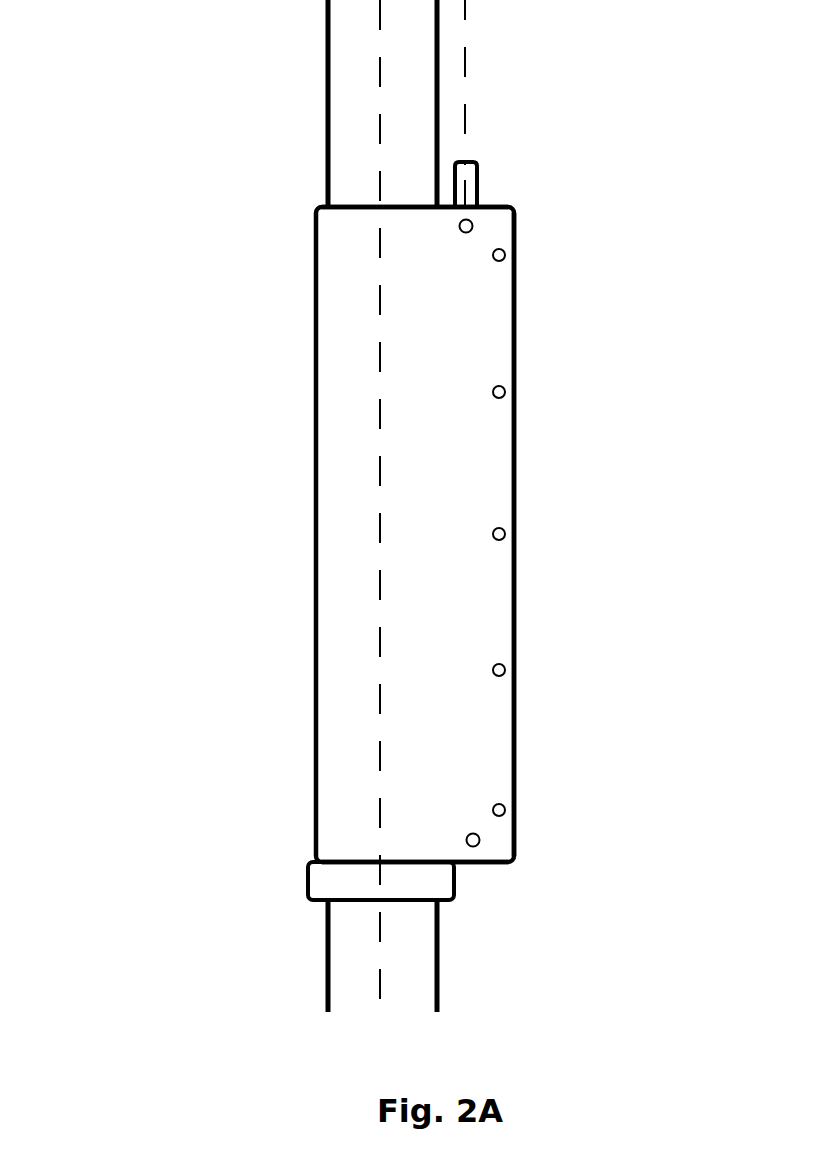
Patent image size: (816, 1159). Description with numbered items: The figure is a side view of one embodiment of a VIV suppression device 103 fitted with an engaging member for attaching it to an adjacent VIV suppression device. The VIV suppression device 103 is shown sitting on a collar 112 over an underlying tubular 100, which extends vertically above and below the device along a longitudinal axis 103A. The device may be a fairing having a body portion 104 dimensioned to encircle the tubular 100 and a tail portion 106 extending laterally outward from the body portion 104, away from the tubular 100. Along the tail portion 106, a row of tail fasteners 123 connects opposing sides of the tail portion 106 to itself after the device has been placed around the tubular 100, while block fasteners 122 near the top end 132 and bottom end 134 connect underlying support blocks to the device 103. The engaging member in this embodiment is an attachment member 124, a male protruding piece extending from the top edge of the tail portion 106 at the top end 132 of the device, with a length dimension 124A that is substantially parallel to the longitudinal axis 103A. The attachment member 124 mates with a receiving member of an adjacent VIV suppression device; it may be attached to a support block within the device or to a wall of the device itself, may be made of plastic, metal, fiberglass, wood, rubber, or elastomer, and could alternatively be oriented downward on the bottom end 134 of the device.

The tubular 100 is at (443, 968).
The VIV suppression device 103 is at (373, 487).
The longitudinal axis 103A is at (372, 127).
The body portion 104 is at (312, 322).
The tail portion 106 is at (520, 227).
The collar 112 is at (305, 878).
The block fasteners 122 is at (455, 226).
The tail fasteners 123 is at (506, 798).
The attachment member 124 is at (481, 166).
The length dimension 124A is at (468, 78).
The top end 132 is at (503, 202).
The bottom end 134 is at (511, 867).